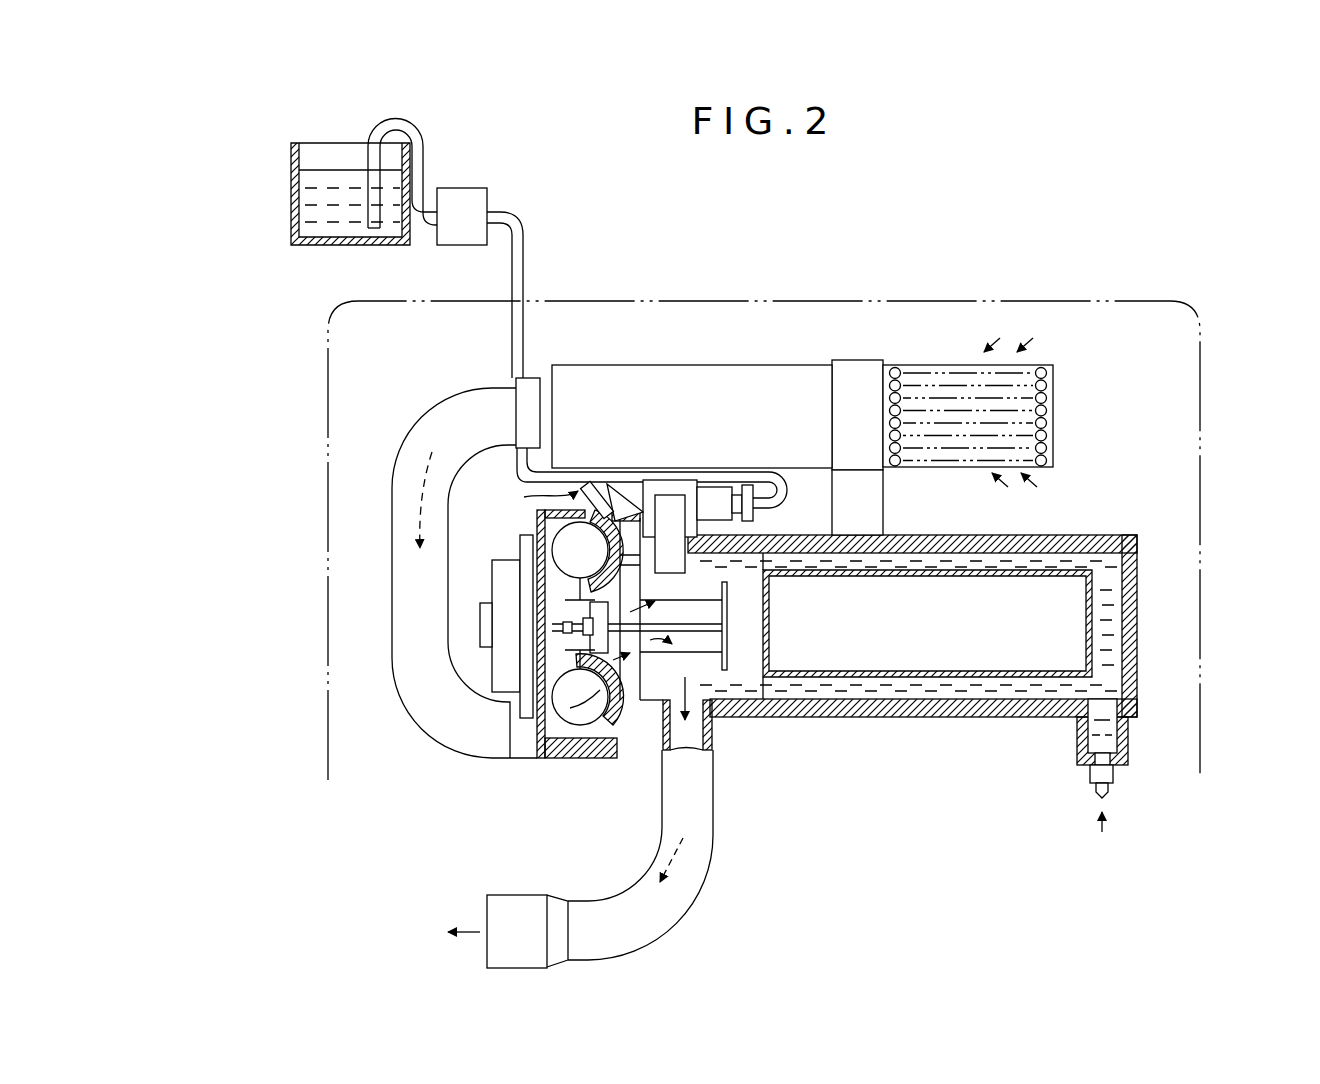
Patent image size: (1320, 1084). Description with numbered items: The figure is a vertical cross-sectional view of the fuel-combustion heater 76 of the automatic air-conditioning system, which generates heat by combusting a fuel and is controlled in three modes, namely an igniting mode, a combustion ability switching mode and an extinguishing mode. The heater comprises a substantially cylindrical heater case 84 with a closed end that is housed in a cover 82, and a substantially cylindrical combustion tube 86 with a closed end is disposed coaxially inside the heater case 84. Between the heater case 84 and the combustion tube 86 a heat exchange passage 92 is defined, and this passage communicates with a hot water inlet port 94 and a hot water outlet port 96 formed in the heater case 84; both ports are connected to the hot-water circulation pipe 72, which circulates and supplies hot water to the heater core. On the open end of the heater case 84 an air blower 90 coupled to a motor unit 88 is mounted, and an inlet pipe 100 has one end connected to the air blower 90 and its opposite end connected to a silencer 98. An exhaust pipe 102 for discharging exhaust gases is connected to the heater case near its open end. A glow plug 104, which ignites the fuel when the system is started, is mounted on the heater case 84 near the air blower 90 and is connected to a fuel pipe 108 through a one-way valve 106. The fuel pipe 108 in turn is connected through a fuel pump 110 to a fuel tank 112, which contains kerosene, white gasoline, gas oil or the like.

The hot-water circulation pipe 72 is at (590, 497).
The fuel-combustion heater 76 is at (799, 511).
The cover 82 is at (1200, 393).
The heater case 84 is at (938, 718).
The combustion tube 86 is at (938, 574).
The motor unit 88 is at (500, 588).
The air blower 90 is at (540, 735).
The heat exchange passage 92 is at (866, 690).
The hot water inlet port 94 is at (1115, 765).
The hot water outlet port 96 is at (612, 497).
The silencer 98 is at (925, 365).
The inlet pipe 100 is at (428, 690).
The exhaust pipe 102 is at (648, 925).
The glow plug 104 is at (673, 510).
The one-way valve 106 is at (712, 492).
The fuel pipe 108 is at (632, 475).
The fuel pump 110 is at (487, 190).
The fuel tank 112 is at (291, 193).